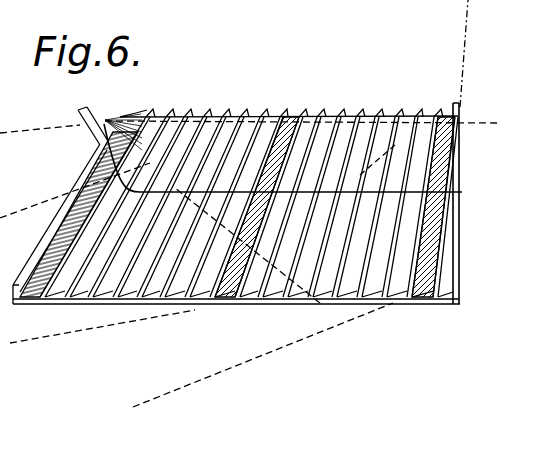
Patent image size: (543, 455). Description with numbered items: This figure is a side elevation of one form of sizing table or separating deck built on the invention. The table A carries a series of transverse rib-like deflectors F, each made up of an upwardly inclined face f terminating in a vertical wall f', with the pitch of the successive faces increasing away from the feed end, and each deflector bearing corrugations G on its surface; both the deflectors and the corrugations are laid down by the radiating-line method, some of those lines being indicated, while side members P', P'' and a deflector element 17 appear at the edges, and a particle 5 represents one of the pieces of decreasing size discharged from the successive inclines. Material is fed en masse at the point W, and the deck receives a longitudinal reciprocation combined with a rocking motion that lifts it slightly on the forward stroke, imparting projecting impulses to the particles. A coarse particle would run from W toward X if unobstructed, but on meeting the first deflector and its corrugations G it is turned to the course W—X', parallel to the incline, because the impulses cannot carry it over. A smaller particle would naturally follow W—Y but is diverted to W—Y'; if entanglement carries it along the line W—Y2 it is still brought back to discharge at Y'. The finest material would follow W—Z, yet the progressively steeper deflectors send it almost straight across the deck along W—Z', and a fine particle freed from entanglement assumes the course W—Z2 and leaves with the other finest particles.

The table A is at (425, 304).
The feed point W is at (101, 117).
The rear purlin rail P' is at (281, 79).
The right side rail P'' is at (470, 152).
The particle 5 is at (211, 114).
The deflector F is at (311, 113).
The upwardly inclined face f is at (338, 189).
The vertical wall f' is at (368, 186).
The end slat 17 is at (443, 113).
The corrugations G is at (78, 216).
The course W— Z2 is at (462, 192).
The course W— Z is at (490, 205).
The course W— Z' is at (312, 126).
The course W— Y is at (279, 278).
The course W— Y' is at (76, 255).
The course W— X is at (263, 355).
The course W— X' is at (97, 321).
The course W— Y2 is at (137, 114).